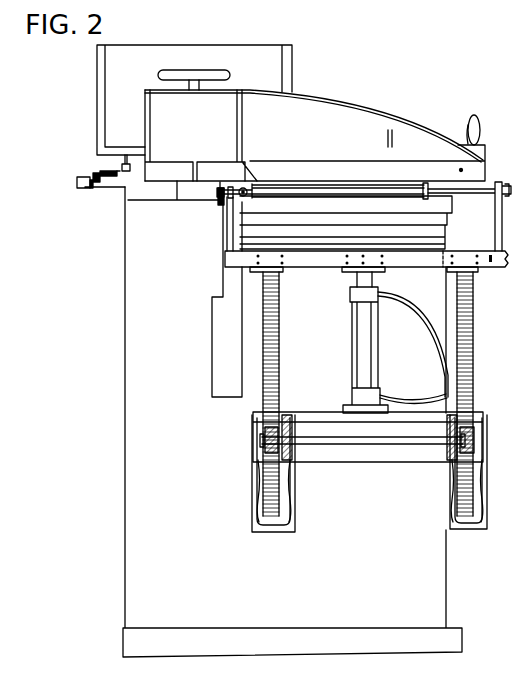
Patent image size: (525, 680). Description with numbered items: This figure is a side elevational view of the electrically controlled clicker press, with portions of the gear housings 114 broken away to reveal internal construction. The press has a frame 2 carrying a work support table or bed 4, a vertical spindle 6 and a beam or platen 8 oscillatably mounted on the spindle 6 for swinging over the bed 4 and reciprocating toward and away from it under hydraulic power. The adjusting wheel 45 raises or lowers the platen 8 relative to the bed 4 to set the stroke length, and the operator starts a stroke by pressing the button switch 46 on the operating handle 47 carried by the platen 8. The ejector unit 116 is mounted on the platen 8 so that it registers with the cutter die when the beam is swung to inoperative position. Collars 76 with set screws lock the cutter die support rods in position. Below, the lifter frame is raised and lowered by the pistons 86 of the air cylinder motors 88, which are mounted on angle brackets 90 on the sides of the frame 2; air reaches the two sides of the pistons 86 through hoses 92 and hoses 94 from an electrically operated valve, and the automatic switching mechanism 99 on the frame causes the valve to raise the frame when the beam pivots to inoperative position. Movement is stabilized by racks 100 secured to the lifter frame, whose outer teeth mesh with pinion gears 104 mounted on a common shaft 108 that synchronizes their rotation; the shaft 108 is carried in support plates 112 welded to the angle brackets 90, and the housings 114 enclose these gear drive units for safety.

The frame 2 is at (447, 568).
The work support table or bed 4 is at (454, 207).
The vertical spindle or shaft 6 is at (196, 203).
The beam or platen 8 is at (340, 101).
The adjusting wheel 45 is at (218, 69).
The button switch 46 is at (476, 115).
The operating handle 47 is at (463, 122).
The collars 76 is at (253, 186).
The pistons 86 is at (356, 281).
The air cylinder motors 88 is at (352, 346).
The angle brackets 90 is at (311, 412).
The hoses 92 is at (395, 396).
The hoses 94 is at (407, 306).
The automatic switching mechanism 99 is at (77, 186).
The elongate gear bars or racks 100 is at (281, 329).
The pinion gears 104 is at (265, 447).
The shaft 108 is at (371, 447).
The support plates 112 is at (292, 472).
The housings 114 is at (254, 508).
The ejector unit 116 is at (300, 66).